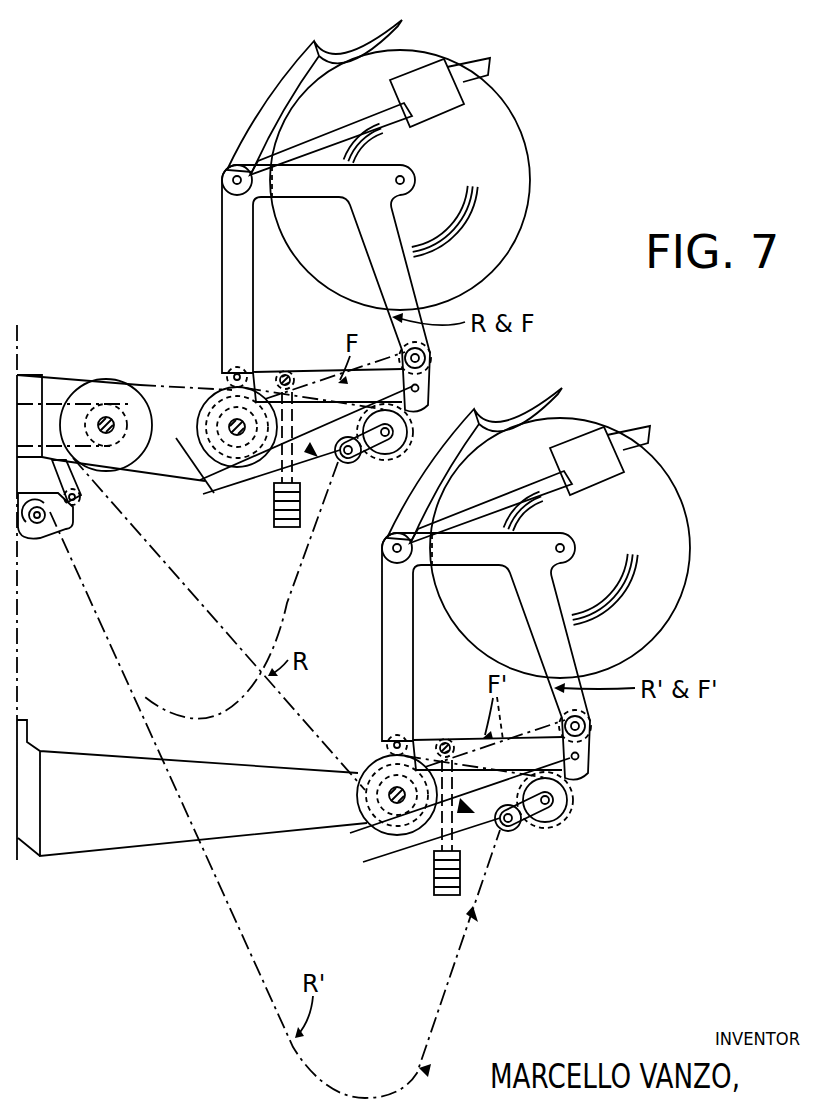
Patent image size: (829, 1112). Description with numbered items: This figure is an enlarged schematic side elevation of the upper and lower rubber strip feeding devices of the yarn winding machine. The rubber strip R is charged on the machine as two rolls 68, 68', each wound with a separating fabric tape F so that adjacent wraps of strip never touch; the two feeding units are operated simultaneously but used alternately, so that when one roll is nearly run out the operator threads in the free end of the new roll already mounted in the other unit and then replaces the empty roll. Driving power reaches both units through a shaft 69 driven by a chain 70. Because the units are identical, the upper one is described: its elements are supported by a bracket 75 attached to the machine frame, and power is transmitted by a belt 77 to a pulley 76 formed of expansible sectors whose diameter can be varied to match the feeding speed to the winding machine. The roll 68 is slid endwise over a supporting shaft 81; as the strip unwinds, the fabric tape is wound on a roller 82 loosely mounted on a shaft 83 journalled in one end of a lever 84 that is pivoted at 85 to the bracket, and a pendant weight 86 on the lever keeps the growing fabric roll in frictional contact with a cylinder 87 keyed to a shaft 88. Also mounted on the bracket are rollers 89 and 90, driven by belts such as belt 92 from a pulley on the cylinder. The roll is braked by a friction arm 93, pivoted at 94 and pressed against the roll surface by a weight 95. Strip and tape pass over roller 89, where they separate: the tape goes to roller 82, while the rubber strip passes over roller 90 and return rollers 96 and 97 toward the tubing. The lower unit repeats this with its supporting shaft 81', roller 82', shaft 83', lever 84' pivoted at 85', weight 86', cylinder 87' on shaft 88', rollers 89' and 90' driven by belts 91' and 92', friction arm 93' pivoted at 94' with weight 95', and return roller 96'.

The roll 68 is at (438, 180).
The shaft 69 is at (105, 420).
The chain 70 is at (54, 400).
The bracket 75 is at (165, 405).
The pulley 76 is at (216, 498).
The belt 77 is at (178, 476).
The supporting shaft 81 is at (344, 288).
The roller 82 is at (213, 350).
The shaft 83 is at (210, 358).
The lever 84 is at (328, 366).
The pivot 85 is at (456, 380).
The pendant weight 86 is at (287, 478).
The cylinder 87 is at (285, 458).
The shaft 88 is at (237, 451).
The roller 89 is at (447, 355).
The roller 90 is at (409, 432).
The belt 92 is at (253, 580).
The friction arm 93 is at (291, 204).
The pivot 94 is at (202, 180).
The weight 95 is at (370, 94).
The return roller 96 is at (303, 464).
The return roller 97 is at (34, 535).
The roll 68' is at (592, 548).
The supporting shaft 81' is at (508, 656).
The roller 82' is at (427, 715).
The shaft 83' is at (424, 700).
The lever 84' is at (488, 733).
The pivot 85' is at (619, 750).
The pendant weight 86' is at (431, 857).
The cylinder 87' is at (460, 825).
The shaft 88' is at (372, 814).
The roller 89' is at (612, 722).
The roller 90' is at (580, 802).
The belt 91' is at (518, 718).
The belt 92' is at (485, 808).
The friction arm 93' is at (443, 574).
The pivot 94' is at (370, 557).
The weight 95' is at (530, 464).
The return roller 96' is at (483, 832).